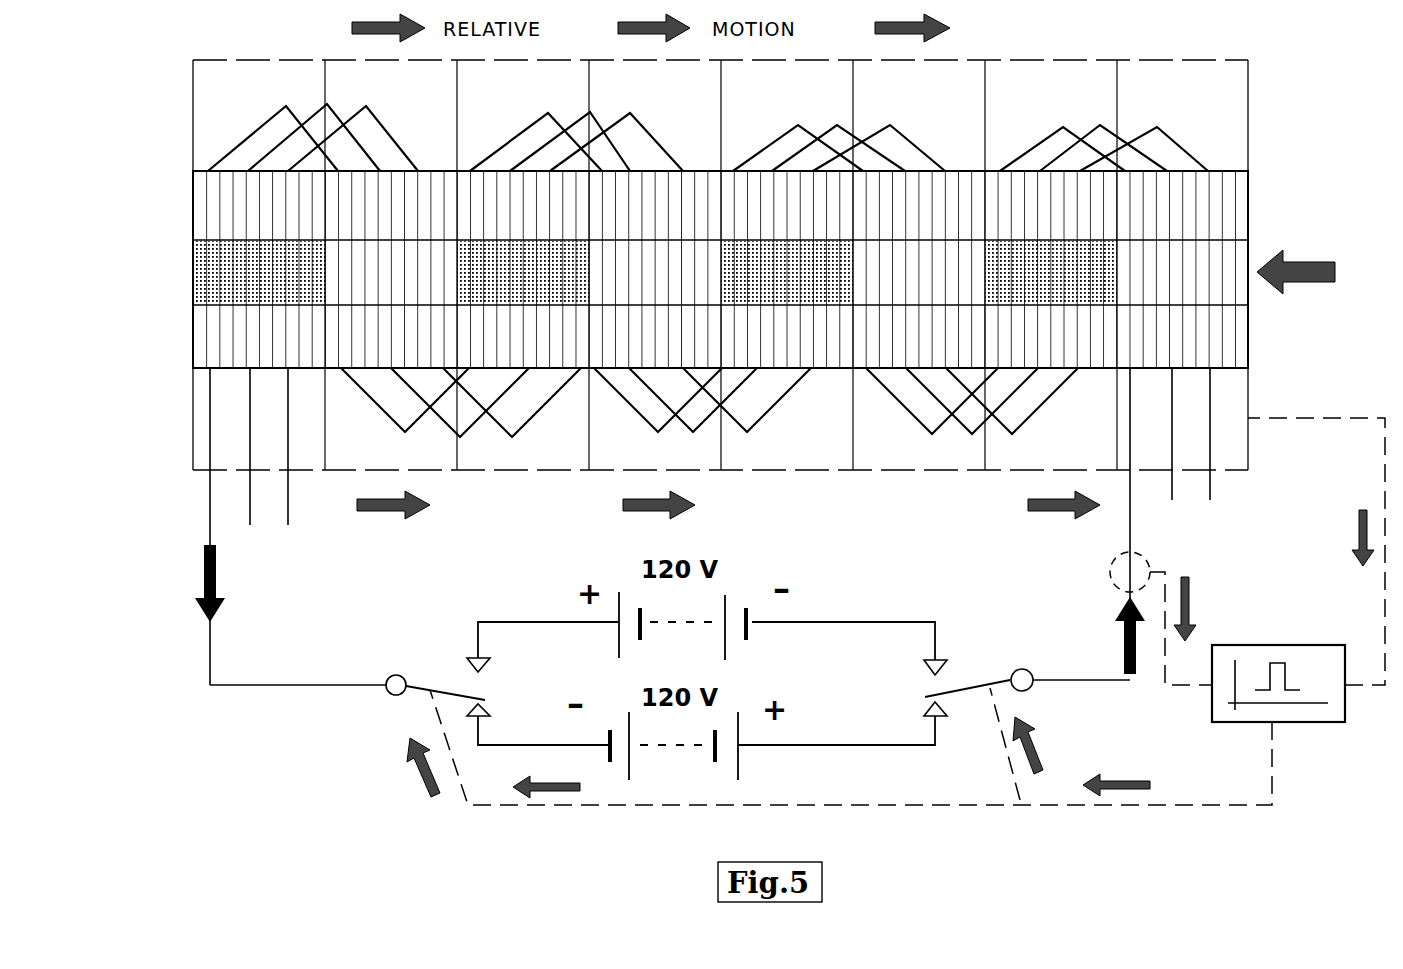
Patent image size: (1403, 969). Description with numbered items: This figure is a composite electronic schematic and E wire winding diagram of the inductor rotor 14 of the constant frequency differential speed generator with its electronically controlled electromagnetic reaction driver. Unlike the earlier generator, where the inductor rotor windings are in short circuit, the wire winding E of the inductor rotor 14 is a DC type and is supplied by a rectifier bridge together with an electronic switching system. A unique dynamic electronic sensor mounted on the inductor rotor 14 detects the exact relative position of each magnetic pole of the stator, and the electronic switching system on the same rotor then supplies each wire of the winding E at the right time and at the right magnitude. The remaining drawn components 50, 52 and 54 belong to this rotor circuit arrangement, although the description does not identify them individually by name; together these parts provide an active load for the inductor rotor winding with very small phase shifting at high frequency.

The inductor rotor 14 is at (794, 372).
The pulse controller 50 is at (1315, 717).
The switch 52 is at (1027, 636).
The switch 54 is at (350, 633).